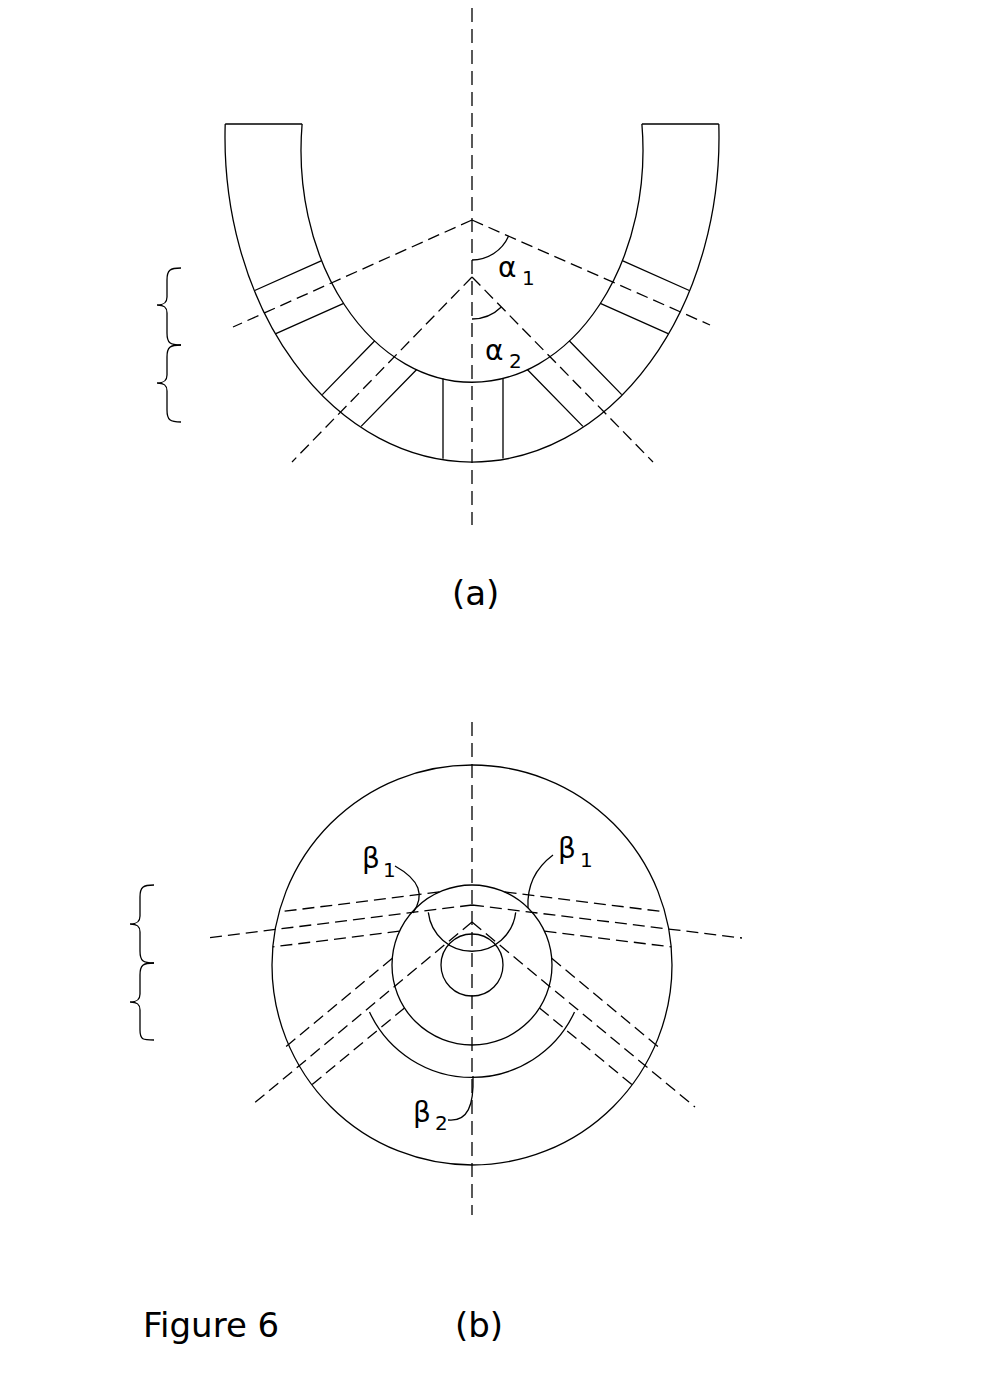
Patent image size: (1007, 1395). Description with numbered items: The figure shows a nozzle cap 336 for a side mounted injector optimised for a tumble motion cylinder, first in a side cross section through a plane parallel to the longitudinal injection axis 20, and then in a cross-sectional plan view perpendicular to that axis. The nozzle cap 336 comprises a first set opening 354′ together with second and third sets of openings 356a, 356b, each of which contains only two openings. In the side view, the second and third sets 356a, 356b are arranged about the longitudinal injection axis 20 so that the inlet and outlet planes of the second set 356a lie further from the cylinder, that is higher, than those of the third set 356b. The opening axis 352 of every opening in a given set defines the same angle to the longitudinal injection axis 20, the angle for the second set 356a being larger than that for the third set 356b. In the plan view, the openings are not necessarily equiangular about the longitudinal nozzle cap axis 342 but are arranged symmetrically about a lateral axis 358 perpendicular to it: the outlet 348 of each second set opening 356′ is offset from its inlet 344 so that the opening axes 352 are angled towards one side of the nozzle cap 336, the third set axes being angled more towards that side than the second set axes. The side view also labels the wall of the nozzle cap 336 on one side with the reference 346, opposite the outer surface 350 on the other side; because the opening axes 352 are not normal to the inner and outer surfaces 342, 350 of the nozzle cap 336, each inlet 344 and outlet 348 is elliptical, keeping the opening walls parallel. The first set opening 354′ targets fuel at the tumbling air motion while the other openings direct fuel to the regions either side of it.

The nozzle cap 336 is at (499, 233).
The longitudinal injection axis 20 is at (566, 266).
The longitudinal nozzle cap axis 342 is at (473, 47).
The first arm 346 is at (303, 177).
The outer surface 350 is at (721, 154).
The second set opening 356′ is at (298, 270).
The second set of openings 356a is at (109, 615).
The third set of openings 356b is at (109, 692).
The opening axis 352 is at (316, 443).
The first set opening 354′ is at (492, 422).
The lateral axis 358 is at (473, 742).
The outlet 348 is at (645, 1068).
The inlet 344 is at (543, 995).